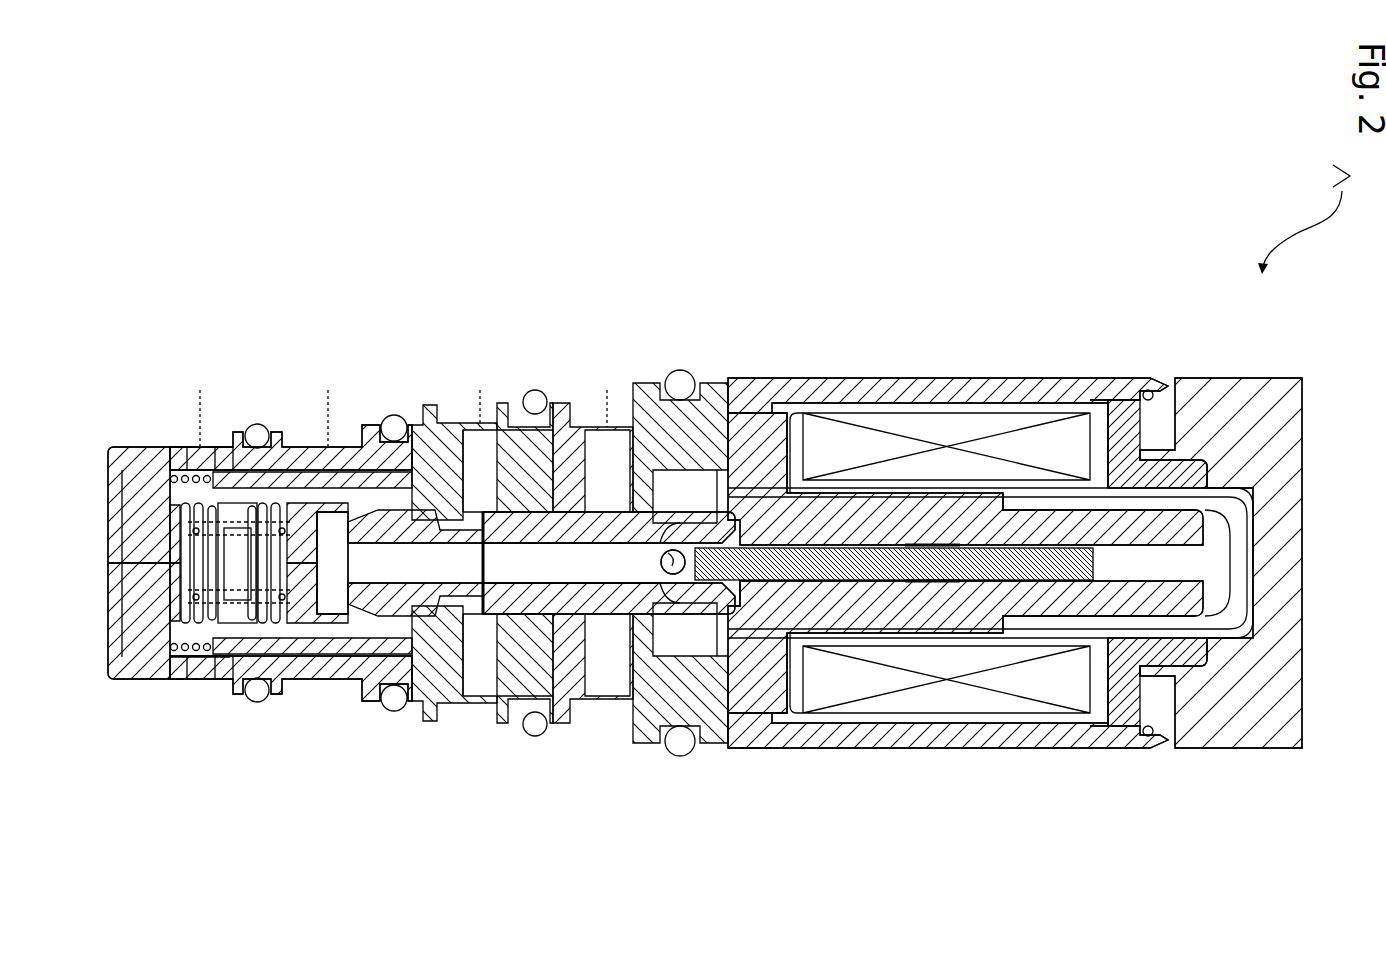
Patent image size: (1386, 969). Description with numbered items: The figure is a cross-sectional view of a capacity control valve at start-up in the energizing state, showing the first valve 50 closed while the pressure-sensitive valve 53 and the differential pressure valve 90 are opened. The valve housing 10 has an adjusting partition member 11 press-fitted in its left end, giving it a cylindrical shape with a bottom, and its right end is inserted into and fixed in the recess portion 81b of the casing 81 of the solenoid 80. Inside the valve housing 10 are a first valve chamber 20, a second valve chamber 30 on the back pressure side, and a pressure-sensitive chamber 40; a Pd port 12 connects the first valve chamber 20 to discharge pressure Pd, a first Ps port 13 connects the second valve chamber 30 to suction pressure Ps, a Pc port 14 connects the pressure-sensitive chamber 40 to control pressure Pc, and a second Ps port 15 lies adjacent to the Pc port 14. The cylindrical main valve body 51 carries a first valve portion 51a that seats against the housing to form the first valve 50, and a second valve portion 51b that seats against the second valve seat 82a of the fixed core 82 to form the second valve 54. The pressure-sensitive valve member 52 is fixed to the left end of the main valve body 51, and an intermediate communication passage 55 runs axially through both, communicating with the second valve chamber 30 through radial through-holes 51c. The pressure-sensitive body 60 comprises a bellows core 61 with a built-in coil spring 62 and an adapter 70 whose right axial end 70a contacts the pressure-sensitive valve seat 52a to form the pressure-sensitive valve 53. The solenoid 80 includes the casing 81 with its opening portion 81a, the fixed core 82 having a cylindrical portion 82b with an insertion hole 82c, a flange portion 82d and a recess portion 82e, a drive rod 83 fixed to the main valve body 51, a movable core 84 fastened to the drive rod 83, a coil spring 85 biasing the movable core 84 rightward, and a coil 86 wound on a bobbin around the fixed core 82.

The valve housing 10 is at (112, 436).
The adjusting partition member 11 is at (130, 578).
The Pd port 12 is at (467, 430).
The first Ps port 13 is at (595, 470).
The Pc port 14 is at (310, 447).
The second Ps port 15 is at (185, 447).
The first valve chamber 20 is at (490, 495).
The second valve chamber 30 is at (648, 495).
The pressure-sensitive chamber 40 is at (335, 500).
The first valve 50 is at (335, 283).
The main valve body 51 is at (560, 635).
The first valve portion 51a is at (440, 500).
The second valve portion 51b is at (680, 500).
The through-holes 51c is at (668, 578).
The pressure-sensitive valve member 52 is at (420, 618).
The pressure-sensitive valve seat 52a is at (360, 636).
The pressure-sensitive valve 53 is at (280, 812).
The second valve 54 is at (755, 283).
The intermediate communication passage 55 is at (482, 633).
The pressure-sensitive body 60 is at (191, 634).
The bellows core 61 is at (240, 627).
The coil spring 62 is at (232, 672).
The adapter 70 is at (308, 634).
The right axial end of the adapter 70a is at (335, 628).
The solenoid 80 is at (1152, 326).
The casing 81 is at (652, 762).
The opening portion 81a is at (735, 625).
The recess portion 81b is at (740, 650).
The fixed core 82 is at (1055, 555).
The second valve seat 82a is at (697, 500).
The cylindrical portion 82b is at (1010, 482).
The insertion hole 82c is at (945, 522).
The flange portion 82d is at (762, 470).
The recess portion 82e is at (915, 545).
The drive rod 83 is at (1062, 497).
The movable core 84 is at (1173, 613).
The coil spring 85 is at (1008, 615).
The coil 86 is at (1047, 693).
The differential pressure valve 90 is at (170, 482).
The suction pressure Ps is at (404, 402).
The control pressure Pc is at (328, 402).
The discharge pressure Pd is at (478, 392).